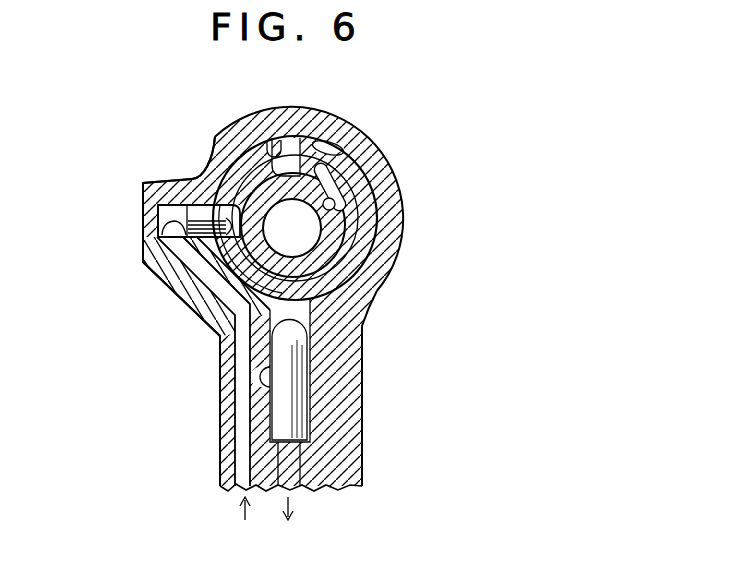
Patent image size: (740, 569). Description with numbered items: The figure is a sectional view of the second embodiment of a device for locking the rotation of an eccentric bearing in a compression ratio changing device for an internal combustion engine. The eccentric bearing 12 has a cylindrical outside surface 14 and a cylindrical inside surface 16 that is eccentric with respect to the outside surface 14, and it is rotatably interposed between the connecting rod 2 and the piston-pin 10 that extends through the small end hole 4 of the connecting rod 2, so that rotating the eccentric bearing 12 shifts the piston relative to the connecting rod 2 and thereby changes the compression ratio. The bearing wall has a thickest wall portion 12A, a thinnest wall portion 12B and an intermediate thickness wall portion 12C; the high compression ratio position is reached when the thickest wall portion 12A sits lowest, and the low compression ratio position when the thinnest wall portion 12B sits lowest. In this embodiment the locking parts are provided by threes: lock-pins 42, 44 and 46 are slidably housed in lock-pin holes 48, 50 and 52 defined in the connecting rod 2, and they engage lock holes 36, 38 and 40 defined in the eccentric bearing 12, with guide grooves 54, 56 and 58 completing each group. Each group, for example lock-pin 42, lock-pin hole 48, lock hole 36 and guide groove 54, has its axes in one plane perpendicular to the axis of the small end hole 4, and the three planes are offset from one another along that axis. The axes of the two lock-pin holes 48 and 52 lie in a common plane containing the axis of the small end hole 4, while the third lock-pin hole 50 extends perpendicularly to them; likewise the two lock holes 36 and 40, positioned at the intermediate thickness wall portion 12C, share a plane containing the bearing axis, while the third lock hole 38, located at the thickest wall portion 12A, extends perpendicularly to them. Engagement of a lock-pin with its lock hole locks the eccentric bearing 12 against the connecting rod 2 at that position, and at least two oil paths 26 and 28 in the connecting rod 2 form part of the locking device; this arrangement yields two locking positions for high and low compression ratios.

The connecting rod 2 is at (222, 468).
The small end hole 4 is at (347, 128).
The piston-pin 10 is at (322, 252).
The eccentric bearing 12 is at (365, 234).
The thickest wall portion 12A is at (292, 148).
The thinnest wall portion 12B is at (258, 302).
The intermediate thickness wall portion 12C is at (346, 212).
The cylindrical outside surface 14 is at (364, 221).
The cylindrical inside surface 16 is at (377, 194).
The oil path 26 is at (246, 441).
The oil path 28 is at (293, 468).
The lock hole 36 is at (146, 209).
The lock hole 40 is at (145, 182).
The lock hole 38 is at (280, 148).
The lock-pin 42 is at (152, 299).
The lock-pin 46 is at (185, 301).
The lock-pin 44 is at (300, 413).
The lock-pin hole 48 is at (94, 234).
The lock-pin hole 52 is at (157, 224).
The lock-pin hole 50 is at (266, 375).
The guide groove 54 is at (166, 159).
The guide groove 58 is at (228, 193).
The guide groove 56 is at (352, 171).